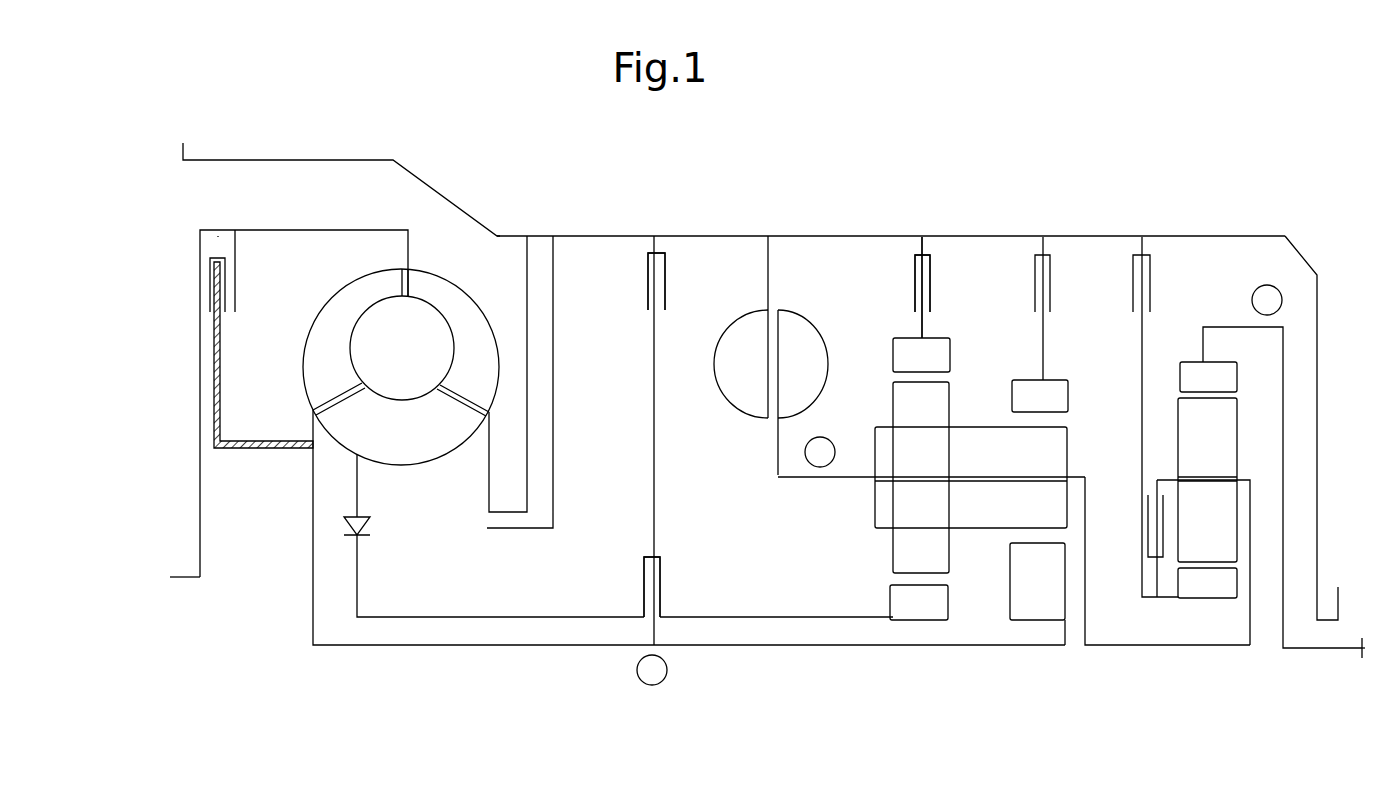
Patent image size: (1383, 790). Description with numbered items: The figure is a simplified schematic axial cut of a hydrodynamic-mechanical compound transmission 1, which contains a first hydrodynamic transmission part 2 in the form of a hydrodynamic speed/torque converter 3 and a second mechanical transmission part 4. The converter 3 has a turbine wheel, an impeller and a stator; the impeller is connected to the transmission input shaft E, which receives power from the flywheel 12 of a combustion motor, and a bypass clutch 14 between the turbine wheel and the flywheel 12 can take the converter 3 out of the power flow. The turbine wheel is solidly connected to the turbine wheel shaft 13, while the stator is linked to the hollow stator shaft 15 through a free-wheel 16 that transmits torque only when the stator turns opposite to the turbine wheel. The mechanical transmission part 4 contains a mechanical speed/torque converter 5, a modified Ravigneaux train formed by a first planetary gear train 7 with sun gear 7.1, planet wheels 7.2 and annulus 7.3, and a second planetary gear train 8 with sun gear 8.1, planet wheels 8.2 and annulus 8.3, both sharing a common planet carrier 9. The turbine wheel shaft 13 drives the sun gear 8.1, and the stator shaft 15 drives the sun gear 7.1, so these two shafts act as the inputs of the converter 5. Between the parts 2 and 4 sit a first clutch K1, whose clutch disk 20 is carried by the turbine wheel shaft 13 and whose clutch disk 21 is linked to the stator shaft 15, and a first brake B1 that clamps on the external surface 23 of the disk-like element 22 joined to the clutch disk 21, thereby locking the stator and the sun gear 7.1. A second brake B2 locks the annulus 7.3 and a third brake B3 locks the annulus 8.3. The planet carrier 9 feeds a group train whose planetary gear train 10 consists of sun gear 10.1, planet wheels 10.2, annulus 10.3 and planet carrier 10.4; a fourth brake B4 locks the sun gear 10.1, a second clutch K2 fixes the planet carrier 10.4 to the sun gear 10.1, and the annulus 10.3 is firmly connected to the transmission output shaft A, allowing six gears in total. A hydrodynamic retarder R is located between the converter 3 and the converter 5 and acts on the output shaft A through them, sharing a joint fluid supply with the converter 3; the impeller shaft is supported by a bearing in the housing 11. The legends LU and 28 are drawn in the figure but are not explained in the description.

The hydrodynamic-mechanical compound transmission 1 is at (962, 160).
The first hydrodynamic transmission part 2 is at (303, 150).
The hydrodynamic speed/torque converter 3 is at (450, 270).
The second mechanical transmission part 4 is at (783, 270).
The mechanical speed/torque converter 5 is at (952, 325).
The first planetary gear train 7 is at (895, 479).
The sun gear 7.1 is at (919, 602).
The planet wheels 7.2 is at (921, 477).
The annulus 7.3 is at (921, 355).
The second planetary gear train 8 is at (996, 493).
The sun gear 8.1 is at (1037, 594).
The planet wheels 8.2 is at (980, 477).
The annulus 8.3 is at (1040, 396).
The planet carrier 9 is at (1088, 622).
The planetary gear train 10 is at (1264, 453).
The sun gear 10.1 is at (1207, 583).
The planet wheels 10.2 is at (1207, 480).
The annulus 10.3 is at (1208, 377).
The planet carrier 10.4 is at (1250, 630).
The housing 11 is at (1300, 252).
The flywheel 12 is at (200, 245).
The turbine wheel shaft 13 is at (385, 645).
The bypass clutch 14 is at (210, 285).
The stator shaft 15 is at (477, 617).
The free-wheel 16 is at (370, 520).
The clutch disk 20 is at (655, 648).
The clutch disk 21 is at (662, 560).
The disk-like element 22 is at (656, 420).
The external surface 23 is at (668, 297).
The connecting line 28 is at (793, 493).
The first brake unit B1 is at (662, 248).
The second brake B2 is at (930, 265).
The third brake B3 is at (1043, 285).
The fourth brake B4 is at (1154, 394).
The first clutch unit K1 is at (664, 598).
The second clutch K2 is at (1148, 550).
The air vent LU is at (218, 237).
The hydrodynamic retarder R is at (763, 302).
The transmission input shaft E is at (168, 578).
The transmission output shaft A is at (1372, 650).